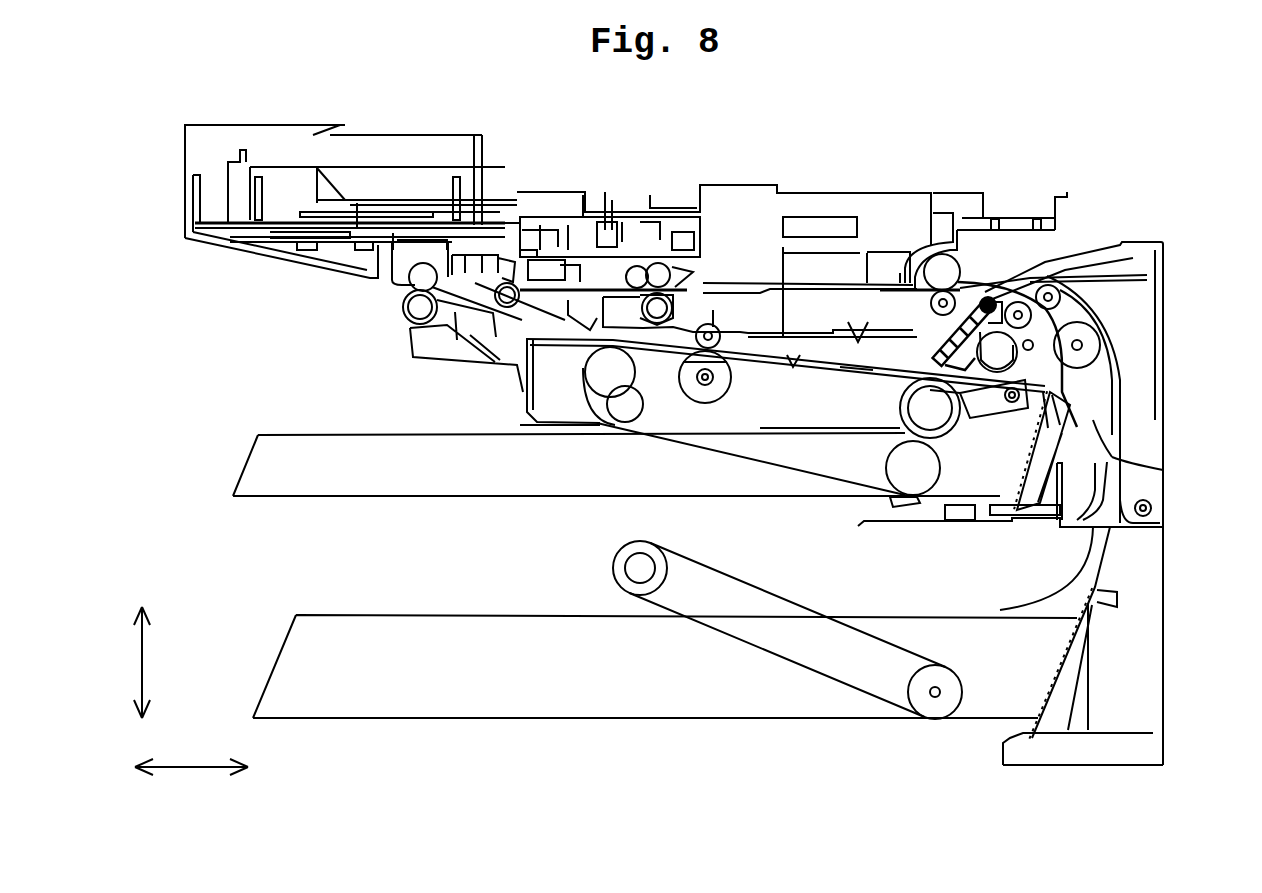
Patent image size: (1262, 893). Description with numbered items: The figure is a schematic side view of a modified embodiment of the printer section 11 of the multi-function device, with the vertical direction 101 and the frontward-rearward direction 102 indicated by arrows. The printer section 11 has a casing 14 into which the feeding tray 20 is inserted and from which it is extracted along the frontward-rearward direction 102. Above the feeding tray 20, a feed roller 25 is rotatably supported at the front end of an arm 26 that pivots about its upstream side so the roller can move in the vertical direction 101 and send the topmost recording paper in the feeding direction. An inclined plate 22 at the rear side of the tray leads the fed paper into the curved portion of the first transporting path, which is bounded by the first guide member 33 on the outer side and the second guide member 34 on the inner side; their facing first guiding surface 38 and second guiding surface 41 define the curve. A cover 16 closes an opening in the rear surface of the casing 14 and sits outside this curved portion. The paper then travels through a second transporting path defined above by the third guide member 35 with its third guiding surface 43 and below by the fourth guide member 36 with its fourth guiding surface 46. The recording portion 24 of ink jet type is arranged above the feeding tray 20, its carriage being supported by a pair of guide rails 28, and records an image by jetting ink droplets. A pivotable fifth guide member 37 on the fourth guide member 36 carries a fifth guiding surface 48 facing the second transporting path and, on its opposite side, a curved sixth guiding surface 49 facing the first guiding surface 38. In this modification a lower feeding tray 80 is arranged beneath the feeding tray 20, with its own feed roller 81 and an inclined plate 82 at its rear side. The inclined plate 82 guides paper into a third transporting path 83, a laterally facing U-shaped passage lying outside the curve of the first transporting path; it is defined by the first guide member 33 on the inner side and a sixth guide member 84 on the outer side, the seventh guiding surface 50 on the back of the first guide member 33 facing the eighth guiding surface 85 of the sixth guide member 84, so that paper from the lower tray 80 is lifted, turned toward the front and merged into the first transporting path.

The printer section 11 is at (1148, 158).
The casing 14 is at (183, 158).
The cover 16 is at (1165, 248).
The feeding tray 20 is at (328, 513).
The inclined plate 22 is at (1064, 492).
The recording portion 24 is at (907, 190).
The feed roller 25 is at (890, 474).
The arm 26 is at (768, 463).
The guide rails 28 is at (1068, 198).
The first guide member 33 is at (1104, 393).
The second guide member 34 is at (1077, 327).
The third guide member 35 is at (858, 342).
The fourth guide member 36 is at (842, 380).
The fifth guide member 37 is at (1098, 425).
The first guiding surface 38 is at (1070, 300).
The second guiding surface 41 is at (1065, 255).
The third guiding surface 43 is at (795, 372).
The fourth guiding surface 46 is at (885, 367).
The fifth guiding surface 48 is at (1080, 347).
The sixth guiding surface 49 is at (1060, 410).
The seventh guiding surface 50 is at (1100, 300).
The feeding tray 80 is at (482, 747).
The feed roller 81 is at (907, 697).
The inclined plate 82 is at (1097, 643).
The third transporting path 83 is at (1127, 502).
The sixth guide member 84 is at (1122, 403).
The eighth guiding surface 85 is at (1090, 300).
The vertical direction 101 is at (143, 663).
The frontward-rearward direction 102 is at (187, 767).